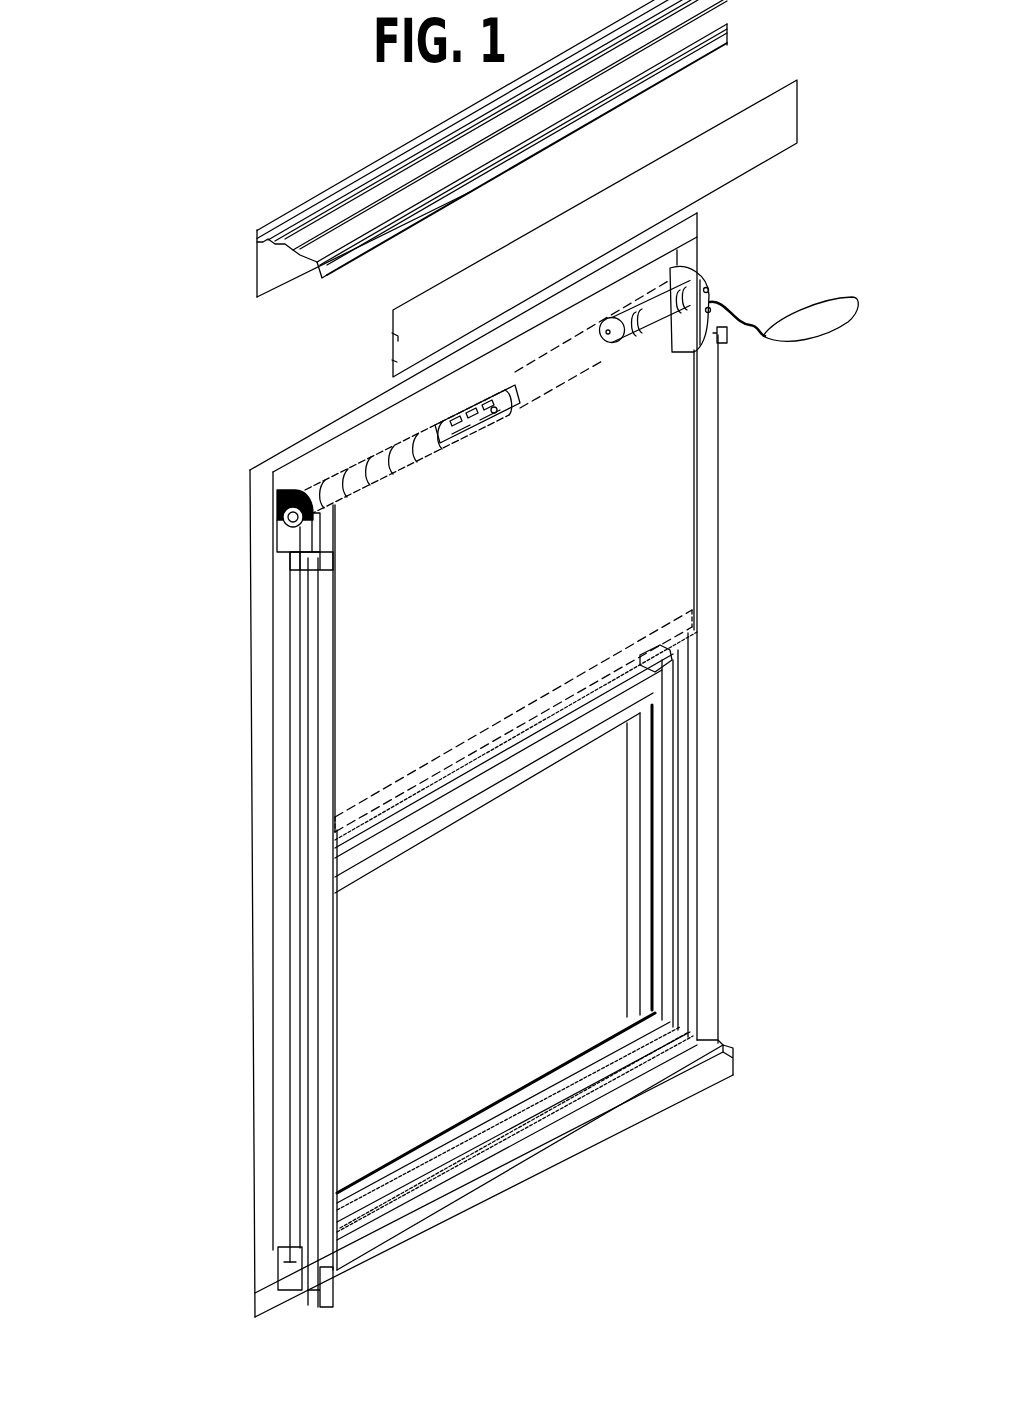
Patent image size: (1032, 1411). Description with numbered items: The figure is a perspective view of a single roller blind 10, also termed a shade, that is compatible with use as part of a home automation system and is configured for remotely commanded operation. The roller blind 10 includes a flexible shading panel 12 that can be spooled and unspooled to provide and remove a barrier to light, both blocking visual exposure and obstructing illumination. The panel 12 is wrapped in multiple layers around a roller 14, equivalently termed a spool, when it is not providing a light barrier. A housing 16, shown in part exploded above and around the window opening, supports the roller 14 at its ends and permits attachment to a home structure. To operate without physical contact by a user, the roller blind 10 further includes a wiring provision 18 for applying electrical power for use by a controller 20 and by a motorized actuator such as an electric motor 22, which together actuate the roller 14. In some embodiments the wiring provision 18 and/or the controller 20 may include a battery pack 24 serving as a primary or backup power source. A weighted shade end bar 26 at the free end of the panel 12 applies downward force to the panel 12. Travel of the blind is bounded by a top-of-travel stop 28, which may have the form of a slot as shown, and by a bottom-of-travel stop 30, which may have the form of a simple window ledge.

The roller blind 10 is at (130, 152).
The flexible shading panel 12 is at (526, 576).
The roller 14 is at (543, 386).
The housing 16 is at (257, 274).
The wiring provision 18 is at (857, 298).
The controller 20 is at (478, 420).
The electric motor 22 is at (630, 328).
The battery pack 24 is at (385, 467).
The weighted shade end bar 26 is at (560, 692).
The top-of-travel stop 28 is at (693, 338).
The bottom-of-travel stop 30 is at (543, 1108).